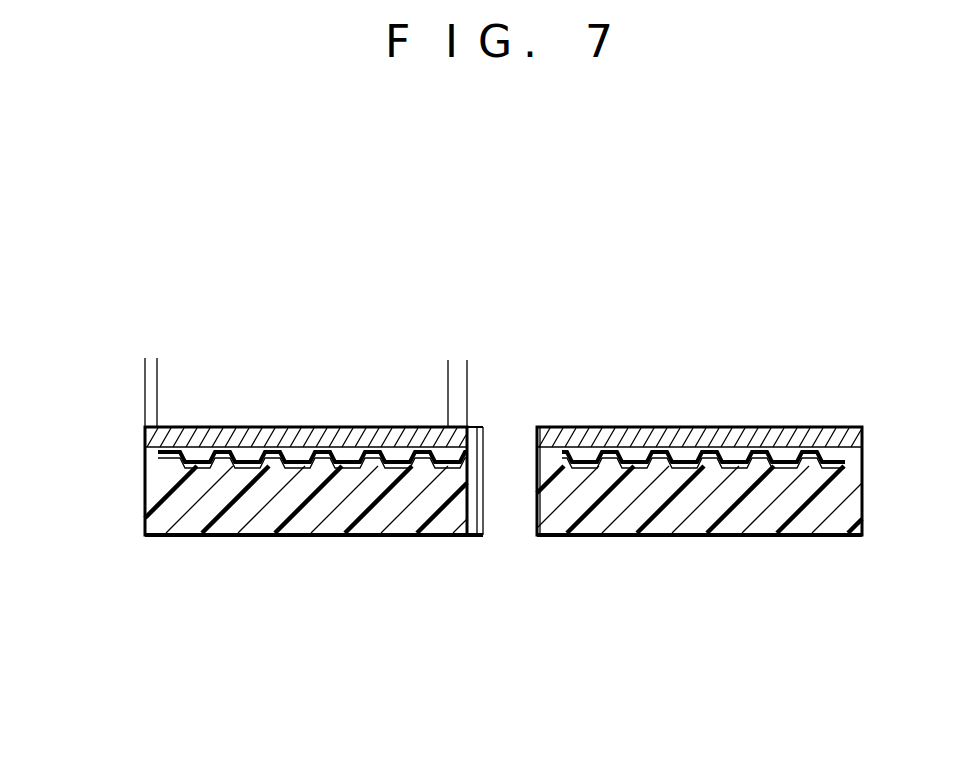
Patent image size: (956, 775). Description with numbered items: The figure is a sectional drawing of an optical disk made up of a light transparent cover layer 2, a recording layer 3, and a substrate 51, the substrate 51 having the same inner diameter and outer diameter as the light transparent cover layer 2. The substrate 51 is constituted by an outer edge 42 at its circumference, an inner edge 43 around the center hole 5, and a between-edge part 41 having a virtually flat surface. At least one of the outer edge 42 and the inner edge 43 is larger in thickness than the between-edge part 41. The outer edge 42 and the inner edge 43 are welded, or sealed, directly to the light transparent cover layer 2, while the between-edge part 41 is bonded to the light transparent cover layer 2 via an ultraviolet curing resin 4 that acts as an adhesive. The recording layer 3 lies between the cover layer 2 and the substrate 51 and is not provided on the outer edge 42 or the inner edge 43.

The light transparent cover layer 2 is at (225, 438).
The recording layer 3 is at (292, 462).
The ultraviolet curing resin 4 is at (669, 457).
The center hole 5 is at (468, 497).
The substrate 51 is at (170, 508).
The between-edge part 41 is at (448, 368).
The outer edge 42 is at (145, 358).
The inner edge 43 is at (457, 367).